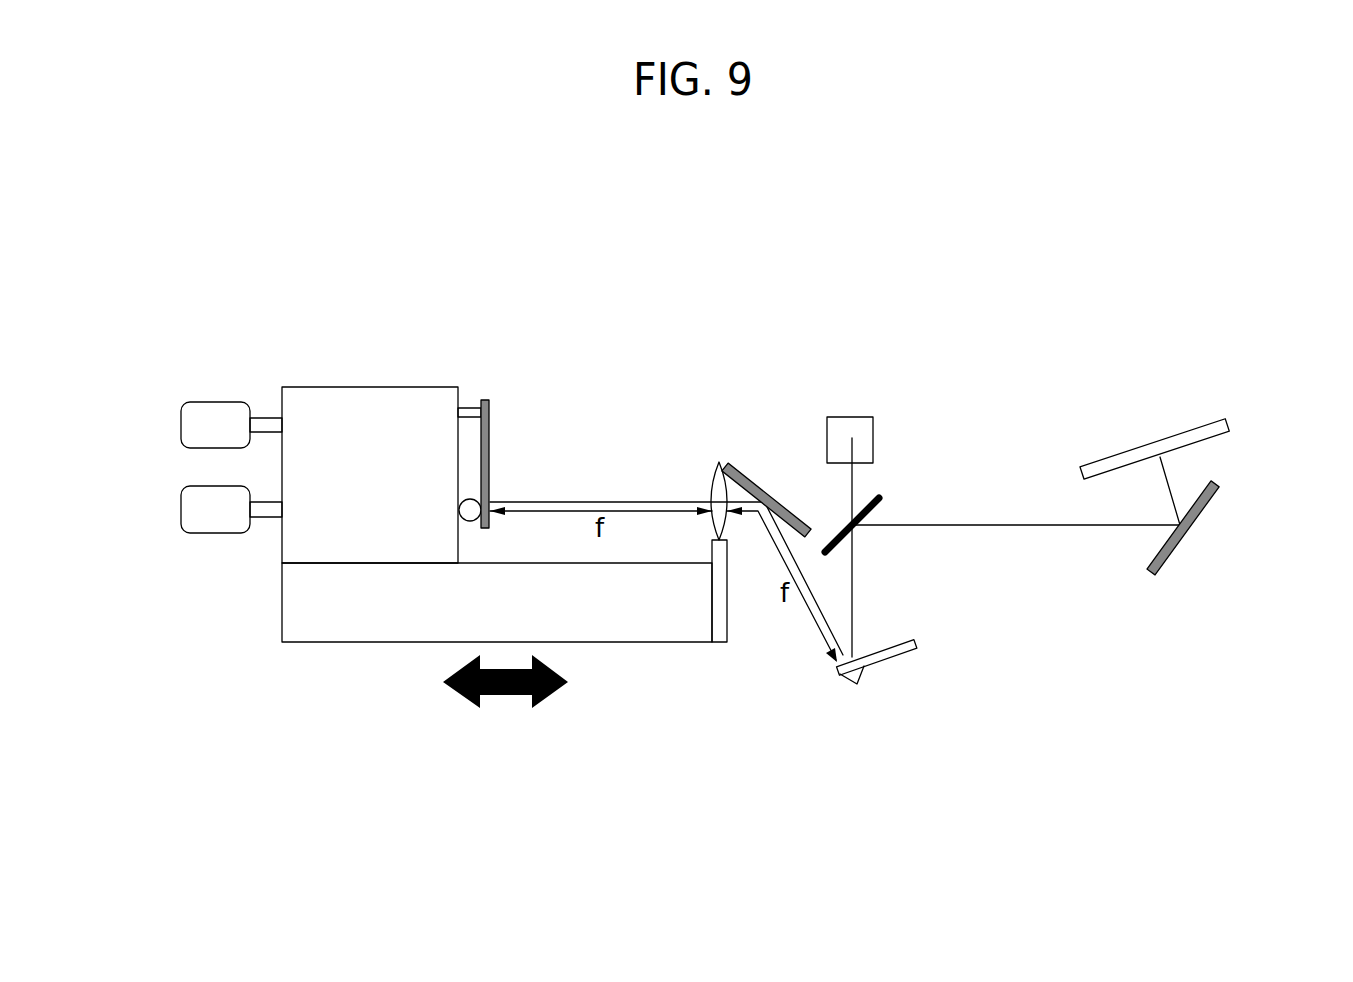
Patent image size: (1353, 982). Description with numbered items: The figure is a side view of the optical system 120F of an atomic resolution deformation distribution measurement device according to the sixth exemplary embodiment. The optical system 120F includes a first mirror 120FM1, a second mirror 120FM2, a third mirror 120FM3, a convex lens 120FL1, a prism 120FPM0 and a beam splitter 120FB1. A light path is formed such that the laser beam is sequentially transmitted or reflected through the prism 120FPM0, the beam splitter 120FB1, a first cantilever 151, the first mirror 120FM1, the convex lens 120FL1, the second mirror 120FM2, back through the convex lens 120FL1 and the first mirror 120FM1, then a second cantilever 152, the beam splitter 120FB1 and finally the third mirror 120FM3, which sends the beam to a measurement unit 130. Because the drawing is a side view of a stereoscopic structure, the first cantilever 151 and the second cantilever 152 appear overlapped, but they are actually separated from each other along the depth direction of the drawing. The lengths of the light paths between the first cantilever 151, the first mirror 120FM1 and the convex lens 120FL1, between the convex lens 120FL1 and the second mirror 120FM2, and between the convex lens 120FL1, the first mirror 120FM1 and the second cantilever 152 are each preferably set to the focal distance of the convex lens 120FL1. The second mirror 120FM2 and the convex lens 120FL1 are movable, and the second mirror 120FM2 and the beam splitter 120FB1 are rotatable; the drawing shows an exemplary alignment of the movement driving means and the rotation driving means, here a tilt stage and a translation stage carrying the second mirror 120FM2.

The optical system 120F is at (476, 316).
The second mirror 120FM2 is at (490, 428).
The convex lens 120FL1 is at (713, 480).
The first mirror 120FM1 is at (755, 473).
The prism 120FPM0 is at (857, 422).
The beam splitter 120FB1 is at (881, 497).
The first cantilever 151 is at (891, 659).
The second cantilever 152 is at (877, 658).
The measurement unit 130 is at (1183, 428).
The third mirror 120FM3 is at (1173, 548).